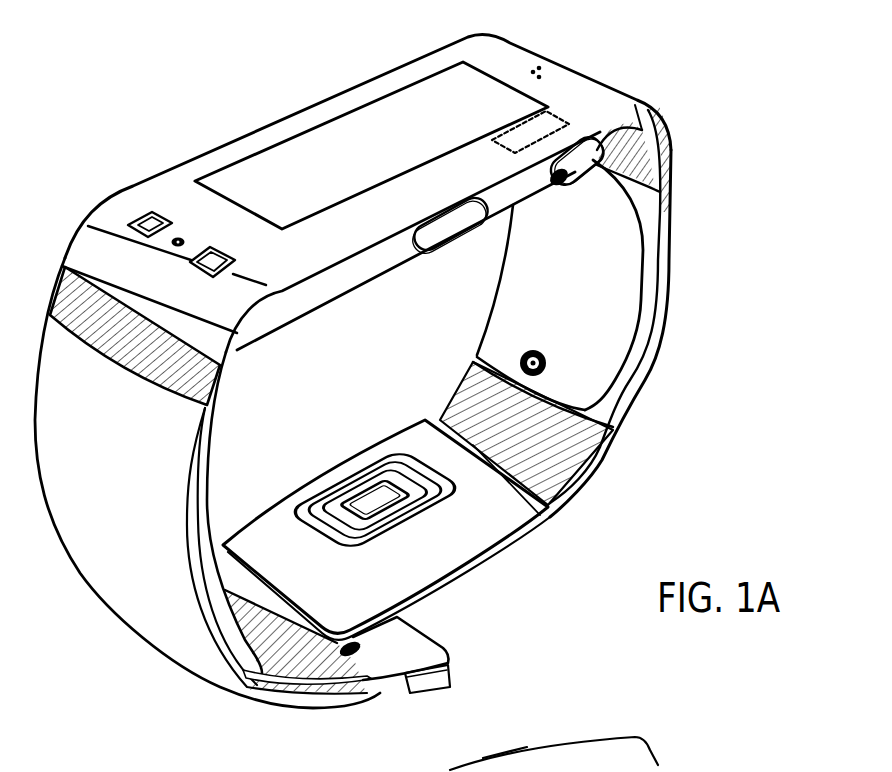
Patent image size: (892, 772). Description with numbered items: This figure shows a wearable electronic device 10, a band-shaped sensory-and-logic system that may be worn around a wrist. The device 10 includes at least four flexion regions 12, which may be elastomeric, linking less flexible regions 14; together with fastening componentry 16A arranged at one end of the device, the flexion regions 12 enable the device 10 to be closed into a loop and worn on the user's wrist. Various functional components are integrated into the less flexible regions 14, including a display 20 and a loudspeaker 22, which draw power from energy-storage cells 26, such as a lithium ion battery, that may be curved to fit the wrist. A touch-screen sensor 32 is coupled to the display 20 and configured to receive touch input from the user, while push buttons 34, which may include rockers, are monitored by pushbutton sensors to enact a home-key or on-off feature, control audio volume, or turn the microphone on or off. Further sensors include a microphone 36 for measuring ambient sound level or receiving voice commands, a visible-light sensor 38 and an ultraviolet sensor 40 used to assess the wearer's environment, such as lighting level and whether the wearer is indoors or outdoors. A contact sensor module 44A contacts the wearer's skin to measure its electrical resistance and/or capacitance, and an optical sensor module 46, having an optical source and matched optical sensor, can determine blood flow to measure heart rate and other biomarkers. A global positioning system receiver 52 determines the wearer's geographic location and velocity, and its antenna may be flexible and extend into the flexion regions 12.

The wearable electronic device 10 is at (93, 92).
The flexion regions 12 is at (668, 109).
The less flexible regions 14 is at (695, 316).
The fastening componentry 16A is at (411, 642).
The display 20 is at (385, 151).
The loudspeaker 22 is at (538, 63).
The energy-storage cells 26 is at (581, 286).
The touch-screen sensor 32 is at (419, 108).
The push buttons 34 is at (447, 227).
The microphone 36 is at (178, 237).
The visible-light sensor 38 is at (216, 268).
The ultraviolet sensor 40 is at (132, 215).
The contact sensor module 44A is at (318, 543).
The optical sensor module 46 is at (385, 492).
The global positioning system (GPS) receiver 52 is at (549, 110).